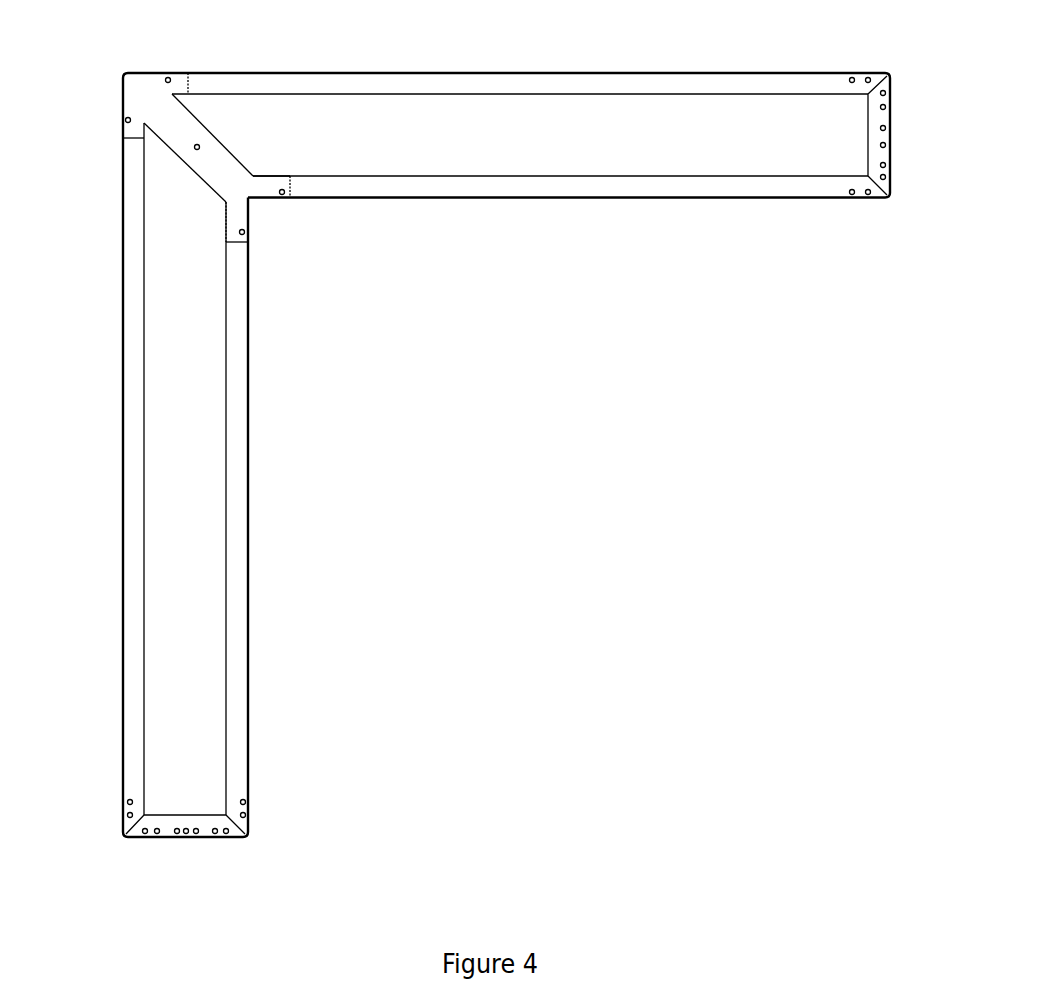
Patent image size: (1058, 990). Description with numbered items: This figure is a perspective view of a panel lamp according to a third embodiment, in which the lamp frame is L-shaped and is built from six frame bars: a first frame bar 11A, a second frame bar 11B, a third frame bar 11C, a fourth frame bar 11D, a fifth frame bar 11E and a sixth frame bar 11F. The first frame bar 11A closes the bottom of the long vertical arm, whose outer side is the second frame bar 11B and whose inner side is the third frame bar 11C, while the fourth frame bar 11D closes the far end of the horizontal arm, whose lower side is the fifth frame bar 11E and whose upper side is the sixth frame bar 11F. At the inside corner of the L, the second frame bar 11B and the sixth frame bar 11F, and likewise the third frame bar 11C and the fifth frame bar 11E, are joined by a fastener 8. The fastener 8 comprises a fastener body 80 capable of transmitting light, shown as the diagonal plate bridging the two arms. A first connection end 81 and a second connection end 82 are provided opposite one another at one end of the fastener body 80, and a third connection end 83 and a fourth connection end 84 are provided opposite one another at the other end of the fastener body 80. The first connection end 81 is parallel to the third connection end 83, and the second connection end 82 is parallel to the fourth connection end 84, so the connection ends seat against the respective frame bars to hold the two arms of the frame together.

The fastener 8 is at (176, 142).
The fastener body 80 is at (212, 158).
The first connection end 81 is at (123, 127).
The second connection end 82 is at (175, 85).
The third connection end 83 is at (238, 222).
The fourth connection end 84 is at (268, 188).
The first frame bar 11A is at (182, 837).
The second frame bar 11B is at (123, 562).
The third frame bar 11C is at (238, 515).
The fourth frame bar 11D is at (881, 142).
The fifth frame bar 11E is at (533, 188).
The sixth frame bar 11F is at (512, 85).